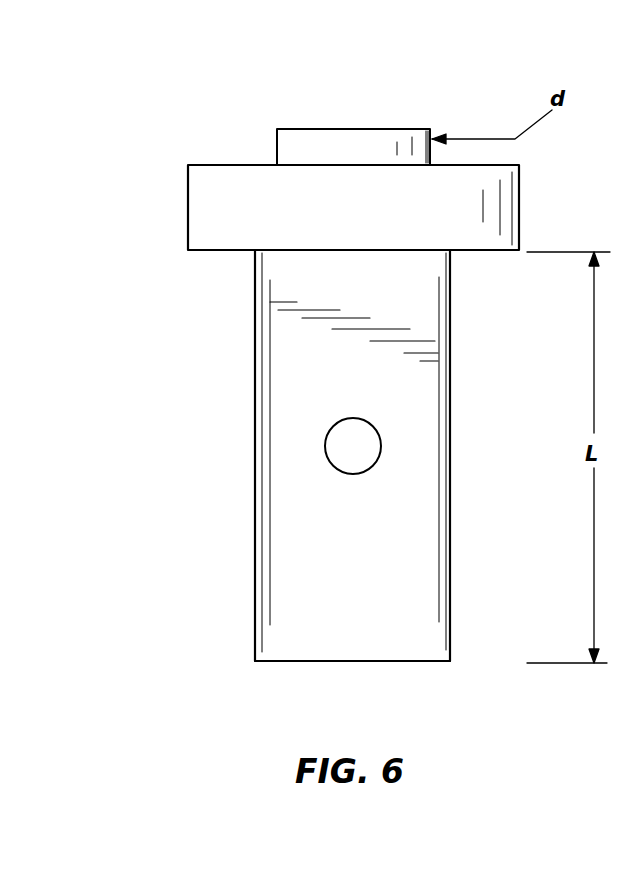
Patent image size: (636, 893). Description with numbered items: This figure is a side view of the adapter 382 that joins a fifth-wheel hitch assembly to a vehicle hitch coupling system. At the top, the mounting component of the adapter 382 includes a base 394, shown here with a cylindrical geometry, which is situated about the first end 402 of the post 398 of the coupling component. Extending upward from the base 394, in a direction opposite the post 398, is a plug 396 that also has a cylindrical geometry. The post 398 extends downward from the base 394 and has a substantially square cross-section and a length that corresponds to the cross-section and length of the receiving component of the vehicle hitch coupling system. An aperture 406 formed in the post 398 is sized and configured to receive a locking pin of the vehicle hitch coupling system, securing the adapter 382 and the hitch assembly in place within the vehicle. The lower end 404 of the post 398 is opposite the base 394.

The adapter 382 is at (252, 134).
The base 394 is at (220, 213).
The plug 396 is at (382, 143).
The post 398 is at (289, 413).
The first end 402 is at (287, 267).
The bottom end of tube 404 is at (277, 639).
The aperture 406 is at (359, 450).